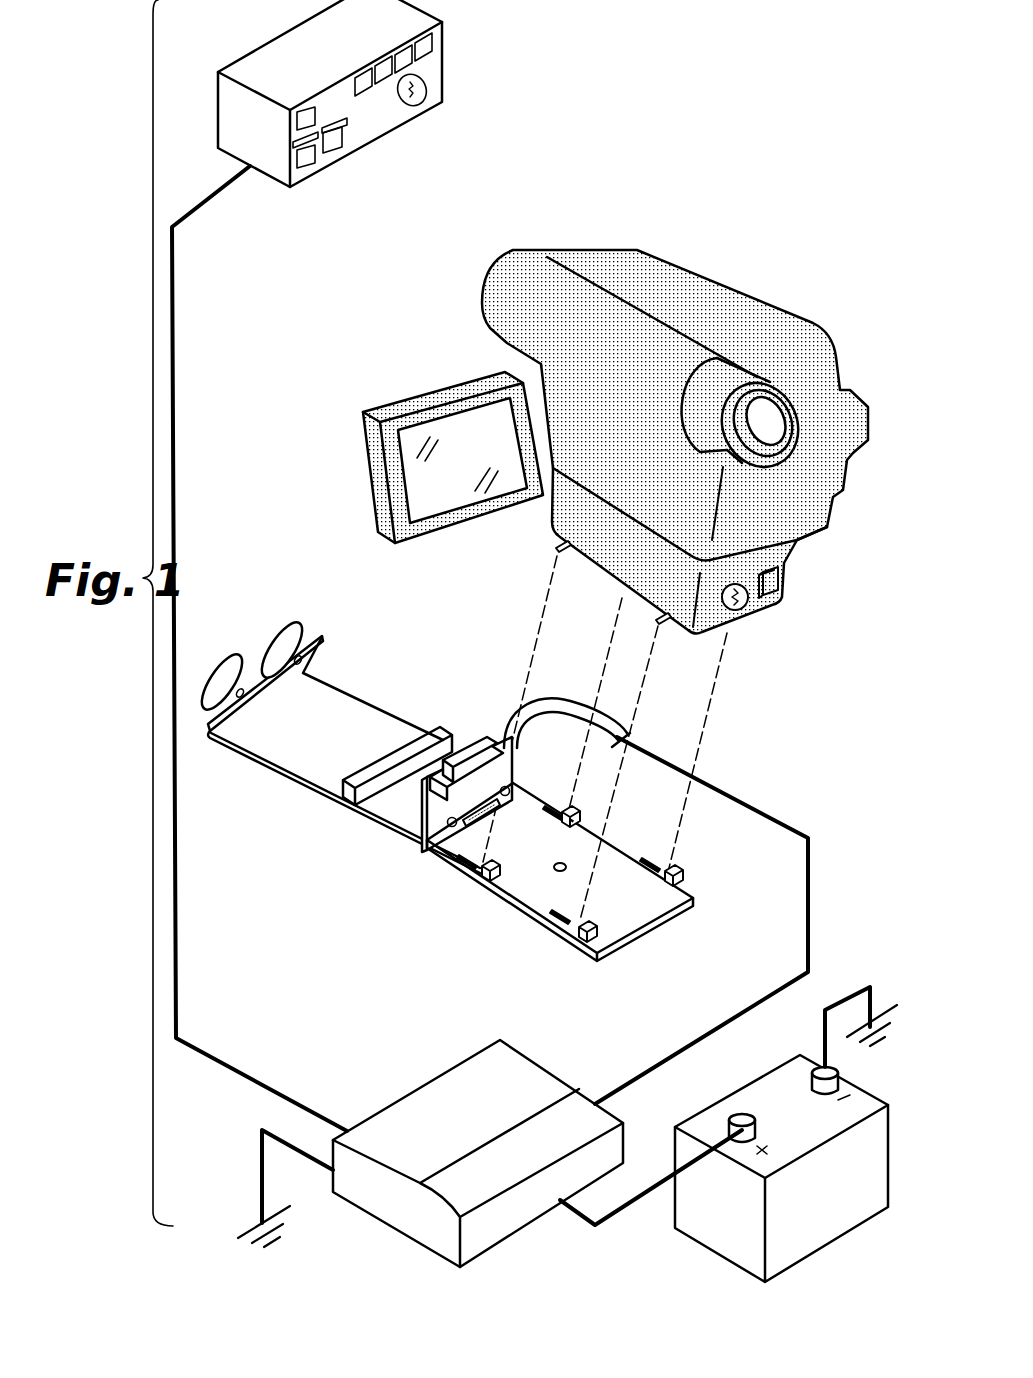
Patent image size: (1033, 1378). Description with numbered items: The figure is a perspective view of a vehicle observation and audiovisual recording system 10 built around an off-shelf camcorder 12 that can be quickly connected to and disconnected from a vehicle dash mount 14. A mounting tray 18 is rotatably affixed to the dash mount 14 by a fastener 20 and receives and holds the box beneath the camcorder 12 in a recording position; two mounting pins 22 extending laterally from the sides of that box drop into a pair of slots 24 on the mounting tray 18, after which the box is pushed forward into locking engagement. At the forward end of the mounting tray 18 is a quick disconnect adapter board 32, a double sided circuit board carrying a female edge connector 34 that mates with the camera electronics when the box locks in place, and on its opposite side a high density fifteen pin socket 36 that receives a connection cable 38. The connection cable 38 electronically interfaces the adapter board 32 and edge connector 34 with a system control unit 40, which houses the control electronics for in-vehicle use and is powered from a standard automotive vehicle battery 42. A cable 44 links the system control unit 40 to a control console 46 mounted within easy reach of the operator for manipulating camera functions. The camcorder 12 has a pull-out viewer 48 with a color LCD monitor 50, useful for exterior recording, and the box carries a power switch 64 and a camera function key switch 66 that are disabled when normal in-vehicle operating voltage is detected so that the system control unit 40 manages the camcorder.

The vehicle observation and audiovisual recording system 10 is at (136, 44).
The camcorder 12 is at (706, 296).
The vehicle dash mount 14 is at (308, 753).
The mounting tray 18 is at (617, 900).
The fastener 20 is at (556, 865).
The mounting pins 22 is at (553, 546).
The slots 24 is at (482, 866).
The quick disconnect adapter board 32 is at (430, 807).
The female edge connector 34 is at (477, 800).
The high density 15 pin socket 36 is at (458, 747).
The connection cable 38 is at (512, 740).
The system control unit 40 is at (447, 1088).
The vehicle battery 42 is at (770, 1100).
The cable 44 is at (240, 1067).
The control console 46 is at (382, 118).
The pull-out viewer 48 is at (415, 429).
The LCD monitor 50 is at (450, 468).
The power switch 64 is at (783, 578).
The camera function key switch 66 is at (742, 609).